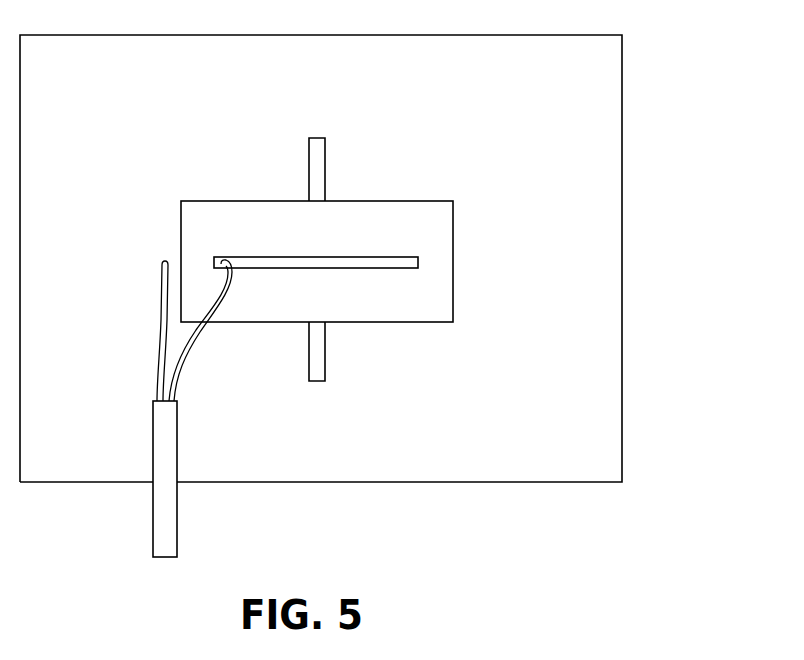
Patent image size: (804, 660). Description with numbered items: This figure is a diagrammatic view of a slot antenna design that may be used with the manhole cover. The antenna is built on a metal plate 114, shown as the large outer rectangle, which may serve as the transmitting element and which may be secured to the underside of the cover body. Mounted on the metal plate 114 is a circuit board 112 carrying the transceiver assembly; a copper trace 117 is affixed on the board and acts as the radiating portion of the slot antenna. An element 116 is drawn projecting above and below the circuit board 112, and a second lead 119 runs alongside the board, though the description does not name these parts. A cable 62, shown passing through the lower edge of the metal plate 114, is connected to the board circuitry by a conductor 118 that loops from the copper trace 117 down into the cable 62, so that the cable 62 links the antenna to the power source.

The cable 62 is at (152, 522).
The circuit board 112 is at (213, 200).
The metal plate 114 is at (622, 102).
The shaft 116 is at (325, 162).
The copper trace 117 is at (378, 268).
The conductor 118 is at (177, 372).
The second wire 119 is at (160, 290).